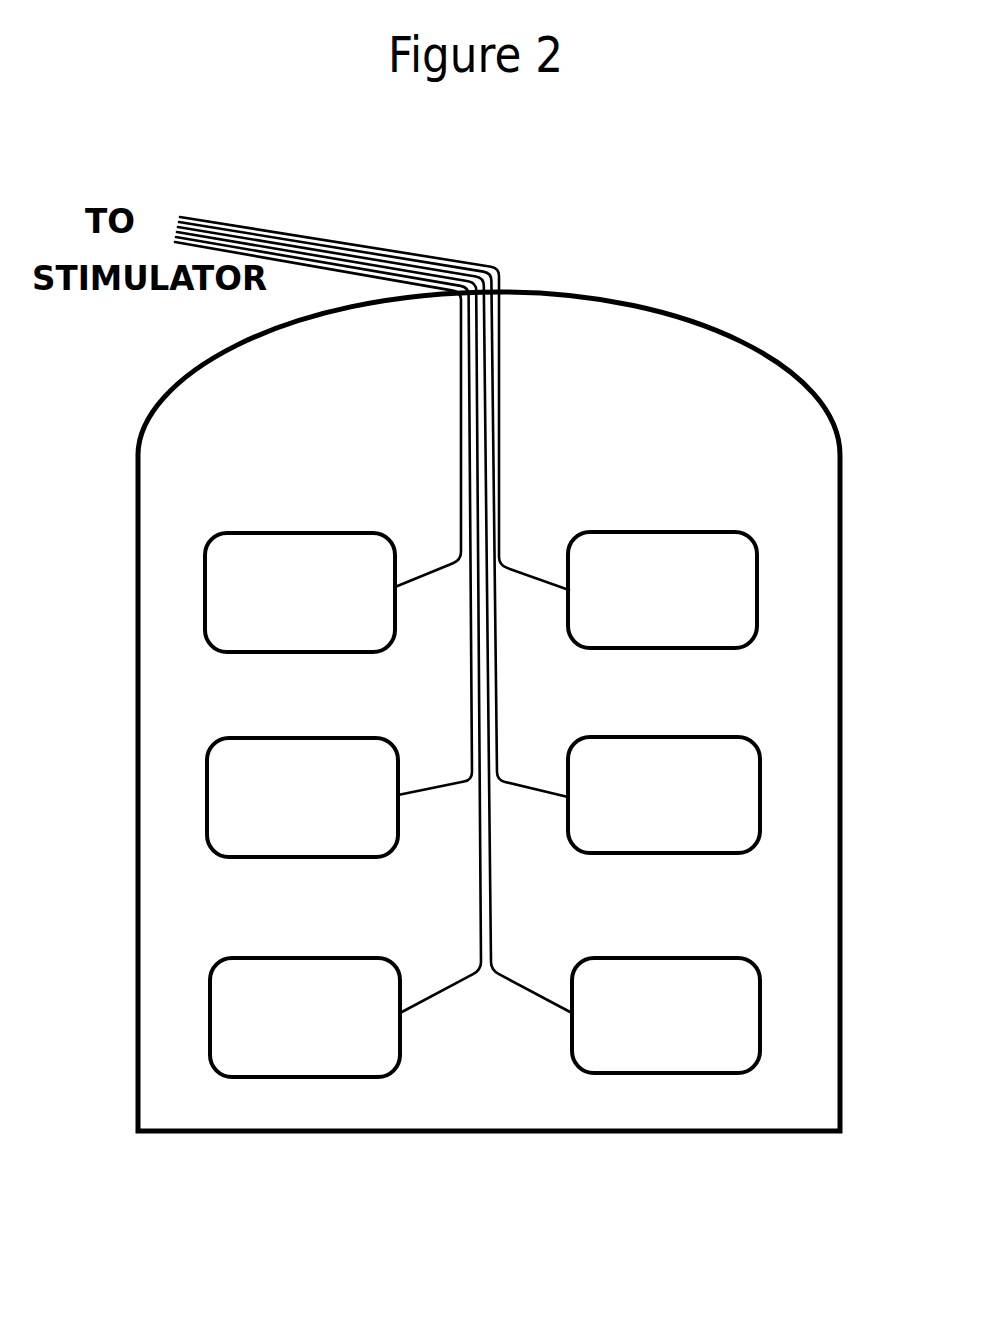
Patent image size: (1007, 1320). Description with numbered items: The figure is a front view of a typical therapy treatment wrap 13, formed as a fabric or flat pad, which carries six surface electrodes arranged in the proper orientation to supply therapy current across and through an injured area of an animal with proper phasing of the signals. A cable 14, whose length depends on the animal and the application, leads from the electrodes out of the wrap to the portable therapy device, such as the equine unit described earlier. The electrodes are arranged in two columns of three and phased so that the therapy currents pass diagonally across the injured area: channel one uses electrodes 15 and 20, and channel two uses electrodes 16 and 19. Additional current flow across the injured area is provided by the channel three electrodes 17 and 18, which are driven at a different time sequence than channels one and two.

The therapy treatment wrap 13 is at (630, 302).
The cable 14 is at (338, 240).
The channel one electrode 15 is at (300, 533).
The channel two electrode 16 is at (660, 532).
The channel three electrode 17 is at (302, 738).
The channel three electrode 18 is at (663, 737).
The channel two electrode 19 is at (300, 958).
The channel one electrode 20 is at (670, 958).